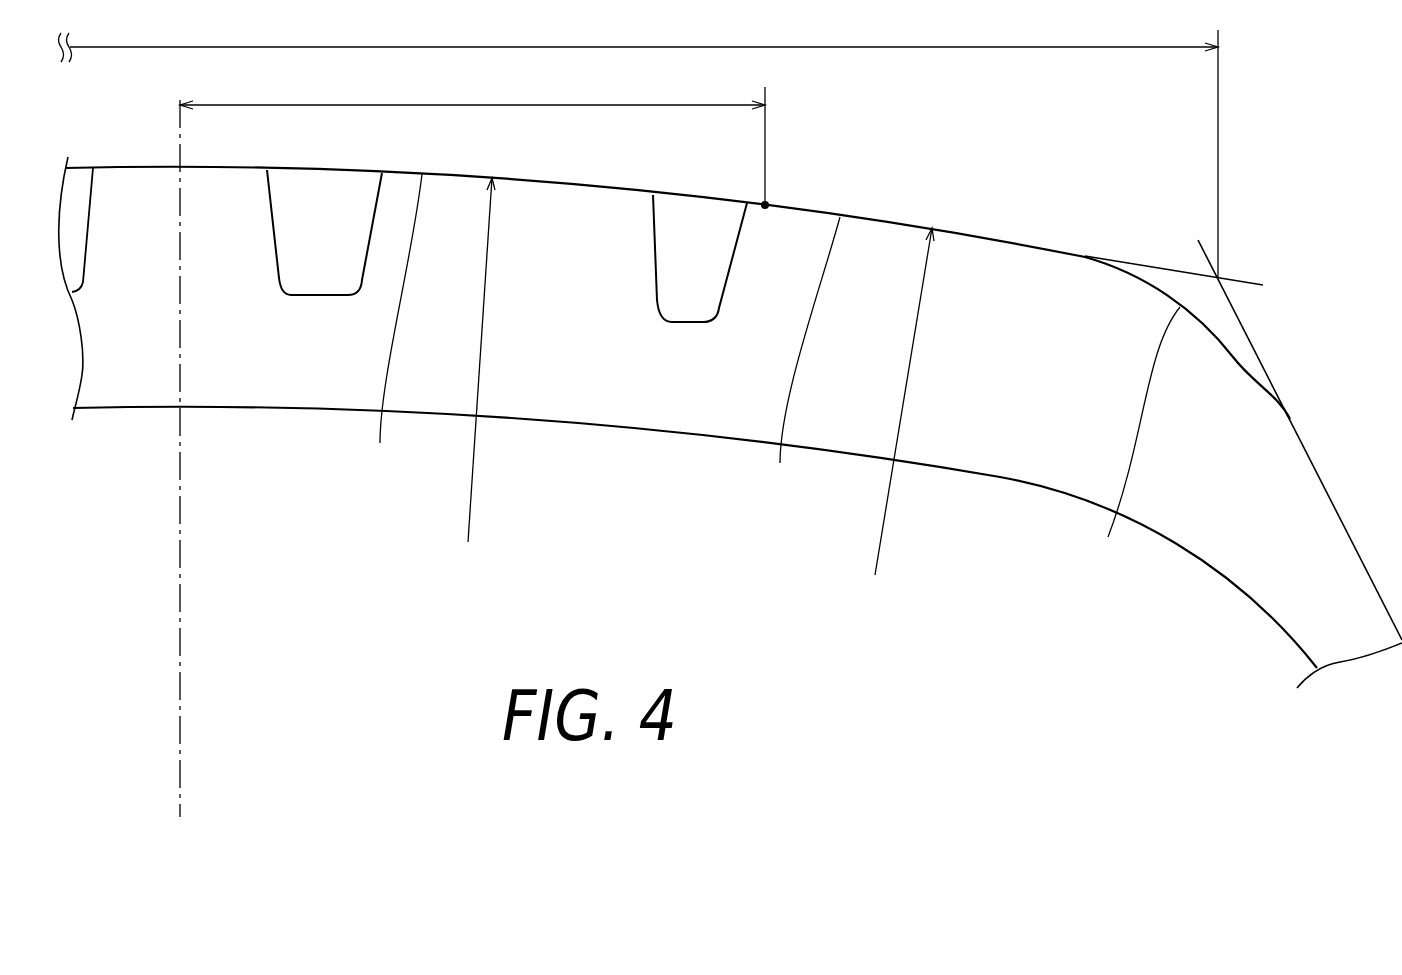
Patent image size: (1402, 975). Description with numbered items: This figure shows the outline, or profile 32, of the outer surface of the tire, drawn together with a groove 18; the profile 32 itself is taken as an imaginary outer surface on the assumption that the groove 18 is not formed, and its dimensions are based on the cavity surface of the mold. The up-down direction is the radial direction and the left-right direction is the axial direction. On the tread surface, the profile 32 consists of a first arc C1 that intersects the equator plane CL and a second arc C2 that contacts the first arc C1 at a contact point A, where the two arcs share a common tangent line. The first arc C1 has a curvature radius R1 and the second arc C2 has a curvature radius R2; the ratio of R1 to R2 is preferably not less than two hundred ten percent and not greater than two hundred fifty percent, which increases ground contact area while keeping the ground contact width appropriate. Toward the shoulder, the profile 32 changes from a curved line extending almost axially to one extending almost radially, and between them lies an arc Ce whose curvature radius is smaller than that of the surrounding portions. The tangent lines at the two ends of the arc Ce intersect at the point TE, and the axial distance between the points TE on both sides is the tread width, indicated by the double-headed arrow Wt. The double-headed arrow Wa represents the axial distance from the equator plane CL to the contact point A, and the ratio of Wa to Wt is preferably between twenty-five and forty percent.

The profile 32 is at (127, 167).
The groove 18 is at (374, 213).
The width of the tread Wt is at (639, 149).
The distance from the equator plane to the contact point Wa is at (472, 140).
The contact point A is at (768, 203).
The point of intersection TE is at (1218, 278).
The equator plane CL is at (180, 617).
The first arc C1 is at (393, 326).
The second arc C2 is at (801, 359).
The arc Ce is at (1132, 440).
The curvature radius of the first arc R1 is at (474, 380).
The curvature radius of the second arc R2 is at (897, 423).